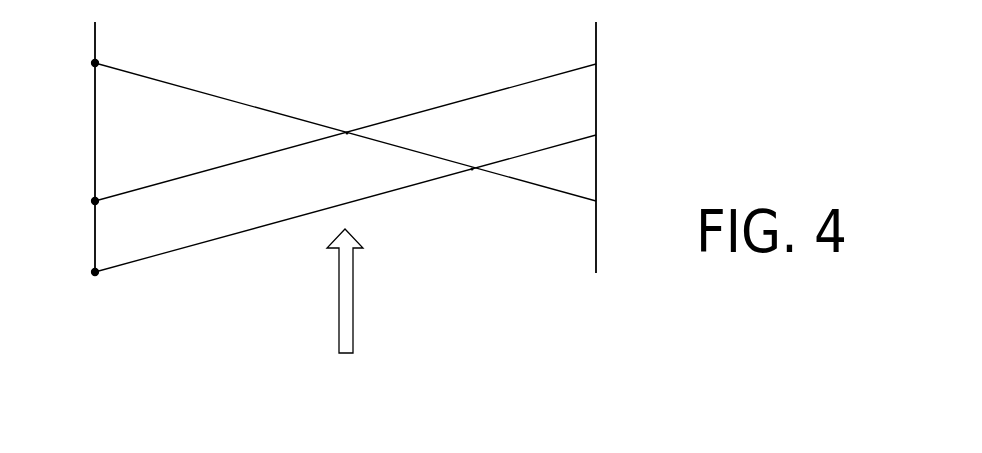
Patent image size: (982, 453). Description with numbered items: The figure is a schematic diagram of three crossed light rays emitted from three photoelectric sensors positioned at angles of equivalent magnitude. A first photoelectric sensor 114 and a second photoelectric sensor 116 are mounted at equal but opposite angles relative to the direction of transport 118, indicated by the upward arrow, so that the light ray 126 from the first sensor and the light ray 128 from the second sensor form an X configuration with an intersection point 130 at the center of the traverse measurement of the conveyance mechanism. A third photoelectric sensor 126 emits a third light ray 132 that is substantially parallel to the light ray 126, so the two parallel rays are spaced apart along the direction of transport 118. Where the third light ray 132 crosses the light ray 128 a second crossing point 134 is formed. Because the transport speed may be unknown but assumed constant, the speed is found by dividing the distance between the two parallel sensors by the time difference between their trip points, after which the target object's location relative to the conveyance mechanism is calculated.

The first photoelectric sensor 114 is at (92, 201).
The second photoelectric sensor 116 is at (92, 63).
The direction of transport 118 is at (339, 304).
The third photoelectric sensor / first light ray 126 is at (92, 272).
The second light ray 128 is at (180, 86).
The intersection point 130 is at (347, 133).
The third light ray 132 is at (293, 217).
The intersection point 134 is at (472, 169).